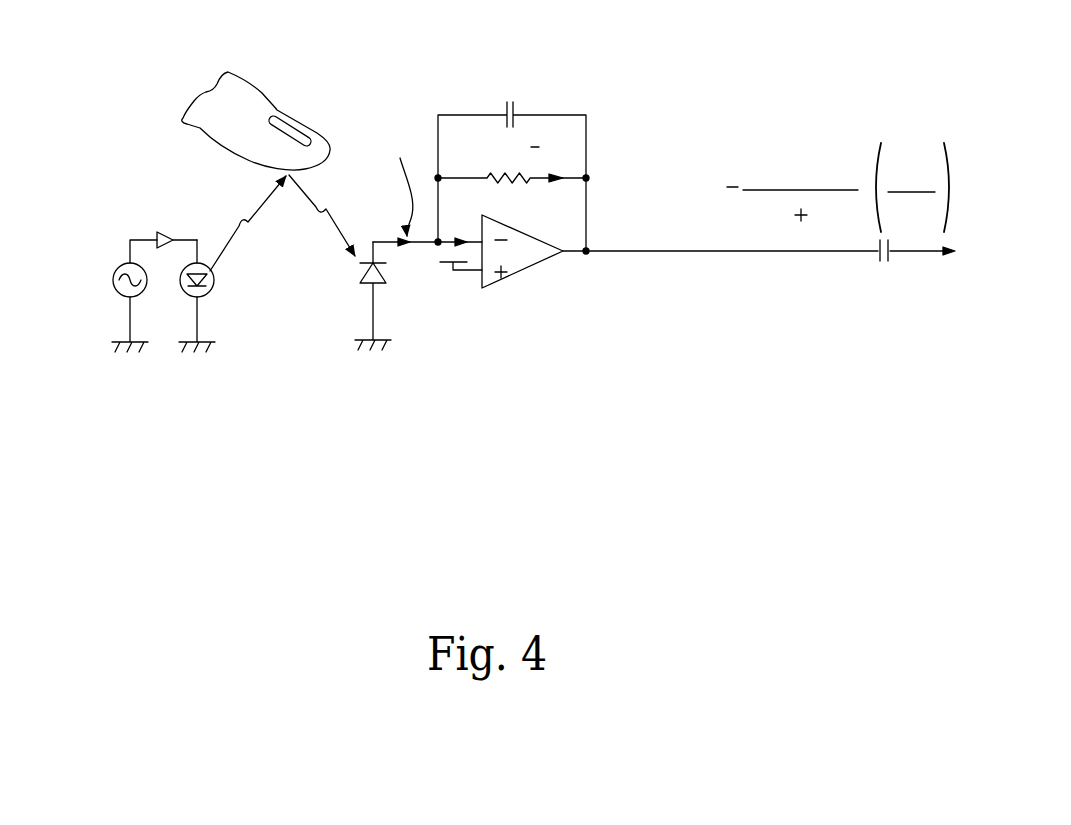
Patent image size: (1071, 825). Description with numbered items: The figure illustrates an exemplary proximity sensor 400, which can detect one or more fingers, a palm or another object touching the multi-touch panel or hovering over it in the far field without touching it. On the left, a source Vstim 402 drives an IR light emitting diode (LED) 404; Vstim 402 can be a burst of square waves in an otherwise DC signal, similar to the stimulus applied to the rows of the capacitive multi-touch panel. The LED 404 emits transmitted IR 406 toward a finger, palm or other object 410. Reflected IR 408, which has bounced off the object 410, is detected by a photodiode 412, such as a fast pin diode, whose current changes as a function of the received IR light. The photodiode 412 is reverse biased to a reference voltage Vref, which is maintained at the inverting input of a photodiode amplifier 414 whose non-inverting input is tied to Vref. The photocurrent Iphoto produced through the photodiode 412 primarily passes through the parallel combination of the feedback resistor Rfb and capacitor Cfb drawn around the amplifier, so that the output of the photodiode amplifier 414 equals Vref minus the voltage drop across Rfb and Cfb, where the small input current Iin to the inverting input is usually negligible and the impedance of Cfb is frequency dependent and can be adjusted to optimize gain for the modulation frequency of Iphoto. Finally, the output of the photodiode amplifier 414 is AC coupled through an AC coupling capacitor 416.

The proximity sensor 400 is at (649, 136).
The source Vstim 402 is at (122, 289).
The IR light emitting diode (LED) 404 is at (221, 296).
The transmitted IR 406 is at (239, 223).
The reflected IR 408 is at (330, 216).
The object 410 is at (261, 106).
The photodiode 412 is at (363, 285).
The photodiode amplifier 414 is at (494, 295).
The AC coupling capacitor 416 is at (883, 270).